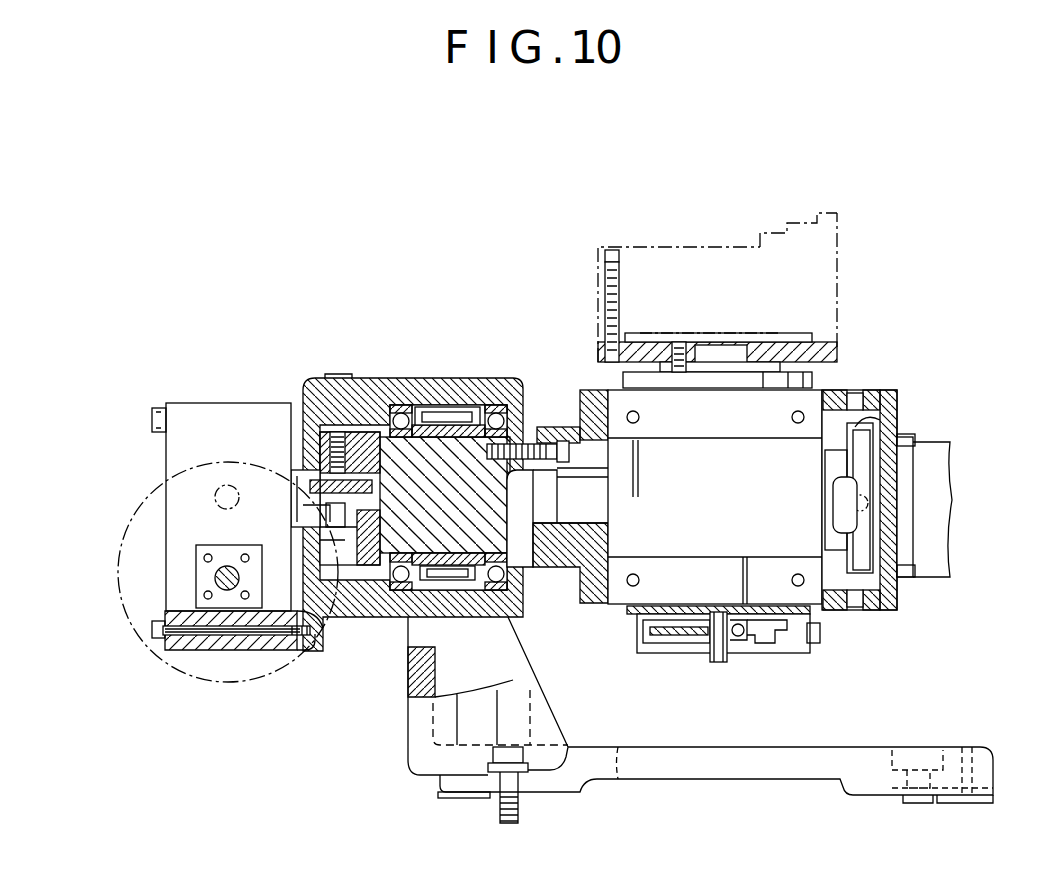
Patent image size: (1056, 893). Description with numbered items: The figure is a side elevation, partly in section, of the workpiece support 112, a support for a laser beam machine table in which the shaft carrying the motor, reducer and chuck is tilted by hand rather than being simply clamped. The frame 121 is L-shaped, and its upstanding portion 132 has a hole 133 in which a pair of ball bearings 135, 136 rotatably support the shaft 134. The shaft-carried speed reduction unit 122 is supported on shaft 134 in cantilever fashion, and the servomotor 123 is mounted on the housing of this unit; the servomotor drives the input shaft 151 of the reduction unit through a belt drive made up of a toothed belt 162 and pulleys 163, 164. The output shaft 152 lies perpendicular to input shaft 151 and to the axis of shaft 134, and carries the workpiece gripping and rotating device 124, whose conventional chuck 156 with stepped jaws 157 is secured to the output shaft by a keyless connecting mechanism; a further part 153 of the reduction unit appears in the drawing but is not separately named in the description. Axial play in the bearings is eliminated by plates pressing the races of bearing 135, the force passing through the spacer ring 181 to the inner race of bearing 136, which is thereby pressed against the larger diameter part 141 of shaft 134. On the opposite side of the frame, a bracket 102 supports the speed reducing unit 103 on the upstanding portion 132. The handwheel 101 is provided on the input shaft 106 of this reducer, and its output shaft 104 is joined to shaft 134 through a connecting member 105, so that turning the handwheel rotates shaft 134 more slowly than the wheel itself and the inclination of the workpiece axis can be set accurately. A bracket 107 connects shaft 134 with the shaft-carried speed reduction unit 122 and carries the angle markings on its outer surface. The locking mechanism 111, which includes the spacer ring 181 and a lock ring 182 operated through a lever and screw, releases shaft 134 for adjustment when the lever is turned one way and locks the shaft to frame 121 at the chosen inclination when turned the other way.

The handwheel 101 is at (212, 684).
The bracket 102 is at (364, 377).
The speed reducing unit 103 is at (186, 402).
The output shaft 104 is at (299, 468).
The connecting member 105 is at (388, 618).
The input shaft 106 is at (216, 578).
The bracket 107 is at (600, 612).
The locking mechanism 111 is at (500, 756).
The workpiece support 112 is at (878, 232).
The frame 121 is at (404, 781).
The speed reduction unit 122 is at (823, 390).
The servomotor 123 is at (940, 447).
The workpiece gripping and rotating device 124 is at (586, 362).
The upstanding portion 132 is at (550, 692).
The hole 133 is at (470, 404).
The shaft 134 is at (441, 591).
The ball bearing 135 is at (407, 403).
The ball bearing 136 is at (494, 402).
The larger diameter part 141 is at (521, 548).
The input shaft 151 is at (848, 511).
The output shaft 152 is at (712, 341).
The bracket 153 is at (600, 391).
The chuck 156 is at (712, 247).
The stepped jaws 157 is at (826, 213).
The toothed belt 162 is at (893, 431).
The pulley 163 is at (860, 530).
The pulley 164 is at (865, 450).
The spacer ring 181 is at (441, 412).
The lock ring 182 is at (436, 408).